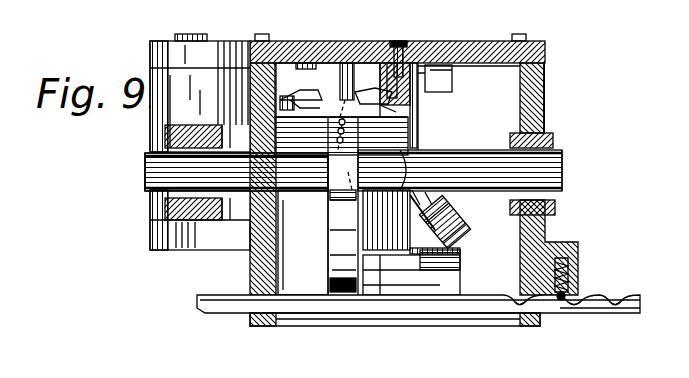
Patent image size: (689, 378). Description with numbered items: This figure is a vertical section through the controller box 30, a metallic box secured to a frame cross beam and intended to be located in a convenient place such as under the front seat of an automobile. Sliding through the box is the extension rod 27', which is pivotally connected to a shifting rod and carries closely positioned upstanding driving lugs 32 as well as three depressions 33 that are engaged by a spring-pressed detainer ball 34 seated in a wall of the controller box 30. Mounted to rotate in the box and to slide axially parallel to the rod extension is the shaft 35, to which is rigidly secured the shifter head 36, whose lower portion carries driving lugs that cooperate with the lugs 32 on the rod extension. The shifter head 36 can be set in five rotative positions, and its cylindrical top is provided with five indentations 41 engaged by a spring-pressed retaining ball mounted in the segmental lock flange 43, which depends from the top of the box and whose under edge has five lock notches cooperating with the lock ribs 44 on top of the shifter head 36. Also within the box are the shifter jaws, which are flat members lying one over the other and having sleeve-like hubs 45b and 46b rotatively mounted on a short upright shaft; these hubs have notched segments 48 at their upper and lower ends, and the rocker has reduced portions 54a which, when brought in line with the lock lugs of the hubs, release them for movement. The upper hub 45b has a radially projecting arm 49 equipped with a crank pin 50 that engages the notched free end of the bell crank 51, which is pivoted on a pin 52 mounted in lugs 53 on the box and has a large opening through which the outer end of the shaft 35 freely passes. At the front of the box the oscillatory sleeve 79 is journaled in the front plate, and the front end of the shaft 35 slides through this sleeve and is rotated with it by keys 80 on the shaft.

The extension rod 27' is at (418, 328).
The controller box 30 is at (252, 268).
The driving lugs 32 is at (430, 277).
The depressions 33 is at (597, 300).
The detainer ball 34 is at (570, 290).
The shaft 35 is at (157, 172).
The shifter head 36 is at (308, 137).
The indentations 41 is at (341, 126).
The lock flange 43 is at (400, 87).
The lock ribs 44 is at (338, 92).
The sleeve-like hub 45b is at (420, 140).
The sleeve-like hub 46b is at (434, 220).
The notched segments 48 is at (457, 254).
The arm 49 is at (353, 53).
The crank pin 50 is at (313, 57).
The bell crank 51 is at (167, 105).
The pin 52 is at (193, 34).
The lugs 53 is at (149, 53).
The reduced portions 54a is at (433, 218).
The oscillatory sleeve 79 is at (566, 98).
The keys 80 is at (562, 148).